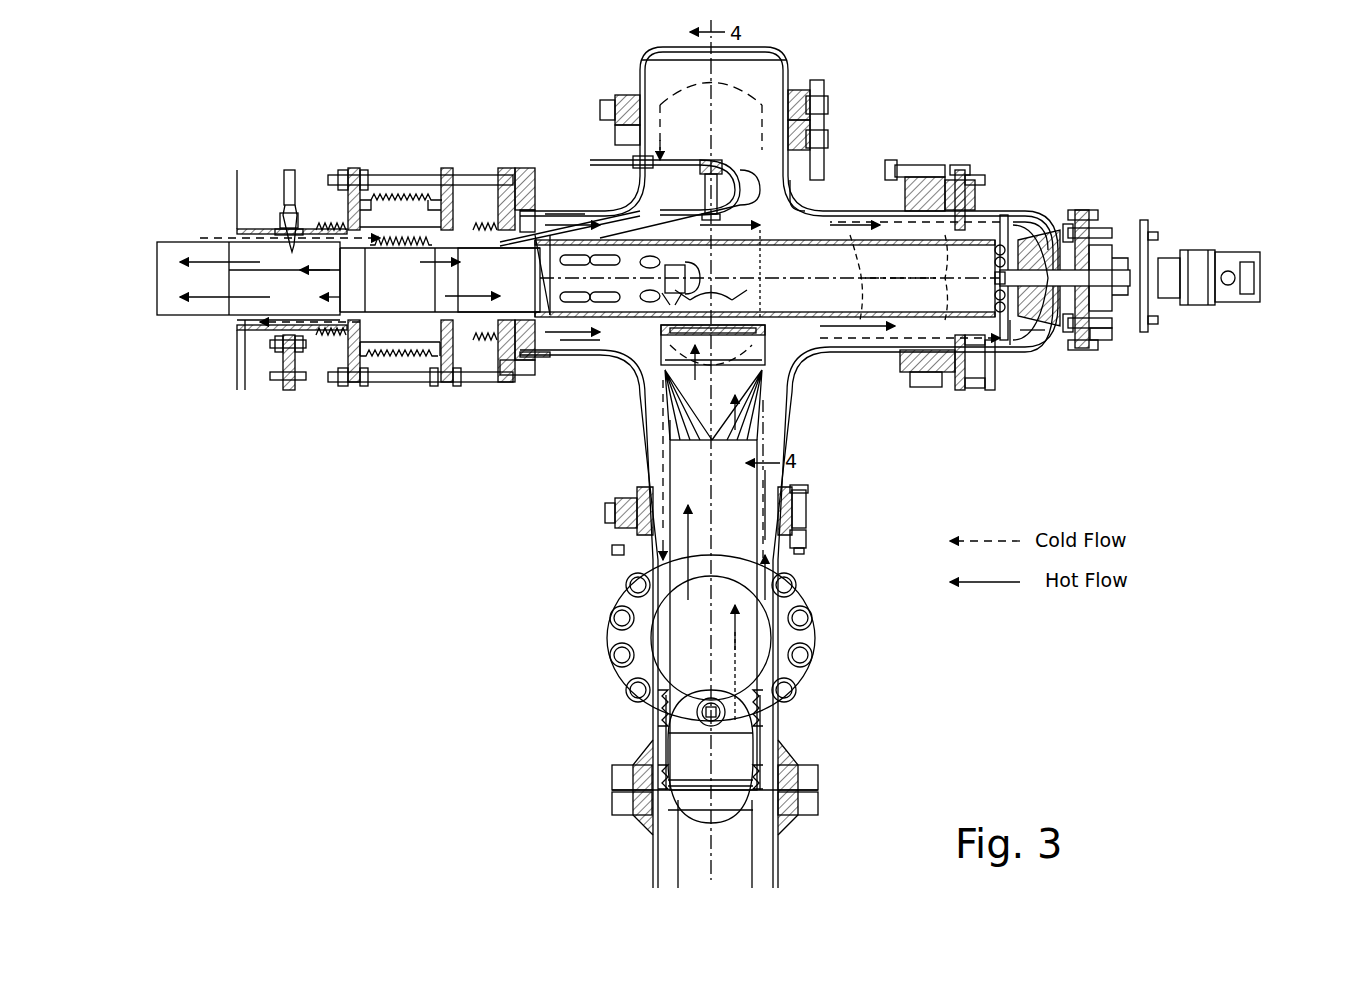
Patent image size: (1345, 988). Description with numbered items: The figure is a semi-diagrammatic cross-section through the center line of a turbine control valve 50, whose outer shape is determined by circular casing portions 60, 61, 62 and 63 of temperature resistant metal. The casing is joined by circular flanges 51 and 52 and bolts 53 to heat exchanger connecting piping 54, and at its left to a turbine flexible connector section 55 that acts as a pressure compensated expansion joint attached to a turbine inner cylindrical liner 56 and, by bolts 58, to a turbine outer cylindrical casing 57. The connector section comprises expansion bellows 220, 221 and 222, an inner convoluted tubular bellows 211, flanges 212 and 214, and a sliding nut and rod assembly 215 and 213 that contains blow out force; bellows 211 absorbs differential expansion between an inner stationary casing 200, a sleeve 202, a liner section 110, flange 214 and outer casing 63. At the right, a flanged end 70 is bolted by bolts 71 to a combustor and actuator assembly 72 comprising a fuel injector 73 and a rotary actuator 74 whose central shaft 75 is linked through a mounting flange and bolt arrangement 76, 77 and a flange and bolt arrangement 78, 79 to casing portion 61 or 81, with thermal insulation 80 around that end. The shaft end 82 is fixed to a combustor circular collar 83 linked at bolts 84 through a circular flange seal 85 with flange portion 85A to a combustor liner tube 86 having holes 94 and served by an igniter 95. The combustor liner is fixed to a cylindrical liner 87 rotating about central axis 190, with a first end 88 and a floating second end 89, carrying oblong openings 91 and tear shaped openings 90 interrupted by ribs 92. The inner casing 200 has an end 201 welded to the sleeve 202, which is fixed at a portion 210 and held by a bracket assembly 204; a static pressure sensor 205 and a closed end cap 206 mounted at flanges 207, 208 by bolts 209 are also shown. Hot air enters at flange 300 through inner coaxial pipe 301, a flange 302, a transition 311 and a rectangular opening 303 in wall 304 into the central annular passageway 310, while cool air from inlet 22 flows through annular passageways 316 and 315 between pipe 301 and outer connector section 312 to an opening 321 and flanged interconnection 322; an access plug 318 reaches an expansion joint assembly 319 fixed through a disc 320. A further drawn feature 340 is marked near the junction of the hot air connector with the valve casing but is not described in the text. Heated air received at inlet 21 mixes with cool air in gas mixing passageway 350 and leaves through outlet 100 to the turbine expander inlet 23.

The inlet 21 is at (705, 785).
The cool air inlet 22 is at (278, 325).
The turbine expander inlet 23 is at (268, 255).
The turbine control valve 50 is at (575, 455).
The circular flange 51 is at (812, 500).
The circular flange 52 is at (815, 520).
The bolts 53 is at (816, 545).
The heat exchanger connecting piping 54 is at (775, 725).
The turbine flexible connector section 55 is at (440, 360).
The turbine inner cylindrical liner 56 is at (237, 325).
The turbine outer cylindrical casing 57 is at (265, 340).
The bolts 58 is at (305, 360).
The circular casing portion 60 is at (812, 440).
The circular casing portion 61 is at (1050, 235).
The circular casing portion 62 is at (790, 200).
The circular casing portion 63 is at (575, 200).
The circular flanged end 70 is at (920, 385).
The bolts 71 is at (945, 385).
The combustor and turbine control valve actuator assembly 72 is at (1050, 345).
The fuel injector 73 is at (998, 272).
The rotary actuator 74 is at (1262, 278).
The central shaft 75 is at (1110, 310).
The circular stationary mounting flange 76 is at (1148, 225).
The bolt 77 is at (1160, 230).
The circular flange 78 is at (1090, 350).
The bolt 79 is at (1095, 340).
The thermal insulation 80 is at (1028, 220).
The casing portion 81 is at (960, 360).
The shaft end 82 is at (1010, 240).
The combustor circular collar 83 is at (1062, 240).
The bolts 84 is at (1050, 340).
The circular flange seal 85 is at (1022, 345).
The flange portion 85A is at (1030, 350).
The combustor liner tube 86 is at (995, 355).
The cylindrical liner 87 is at (910, 298).
The first end 88 is at (848, 295).
The second end 89 is at (548, 355).
The tear shaped openings 90 is at (595, 255).
The oblong openings 91 is at (640, 300).
The strengthening ribs 92 is at (578, 330).
The circular openings 94 is at (992, 297).
The combustor igniter 95 is at (962, 170).
The outlet 100 is at (492, 280).
The liner section 110 is at (515, 370).
The central axis 190 is at (800, 270).
The inner stationary casing 200 is at (860, 200).
The inner casing end 201 is at (650, 225).
The turbine control valve sleeve 202 is at (605, 215).
The bracket assembly 204 is at (714, 158).
The static pressure sensor 205 is at (683, 150).
The cylindrical closed end cap 206 is at (672, 52).
The flange 207 is at (826, 108).
The flange 208 is at (826, 138).
The bolts 209 is at (812, 95).
The circular axially aligned portion 210 is at (500, 220).
The inner convoluted tubular bellows 211 is at (400, 232).
The flange 212 is at (518, 170).
The sliding nut and rod assembly 213 is at (350, 170).
The flange 214 is at (288, 175).
The sliding nut and rod assembly 215 is at (364, 175).
The expansion bellows 220 is at (482, 342).
The expansion bellows 221 is at (395, 362).
The expansion bellows 222 is at (340, 340).
The circular flange 300 is at (790, 748).
The inner coaxial pipe 301 is at (765, 575).
The flange 302 is at (765, 345).
The rectangular opening 303 is at (770, 365).
The wall 304 is at (765, 318).
The central annular passageway 310 is at (797, 276).
The transition 311 is at (755, 420).
The outer heat exchange connector section 312 is at (785, 565).
The annular passageway 315 is at (765, 480).
The annular passageway 316 is at (589, 281).
The access plug 318 is at (712, 705).
The expansion joint assembly 319 is at (765, 700).
The disc 320 is at (785, 800).
The circular opening 321 is at (760, 628).
The flanged interconnection 322 is at (820, 628).
The jets 340 is at (660, 372).
The gas mixing passageway 350 is at (440, 274).